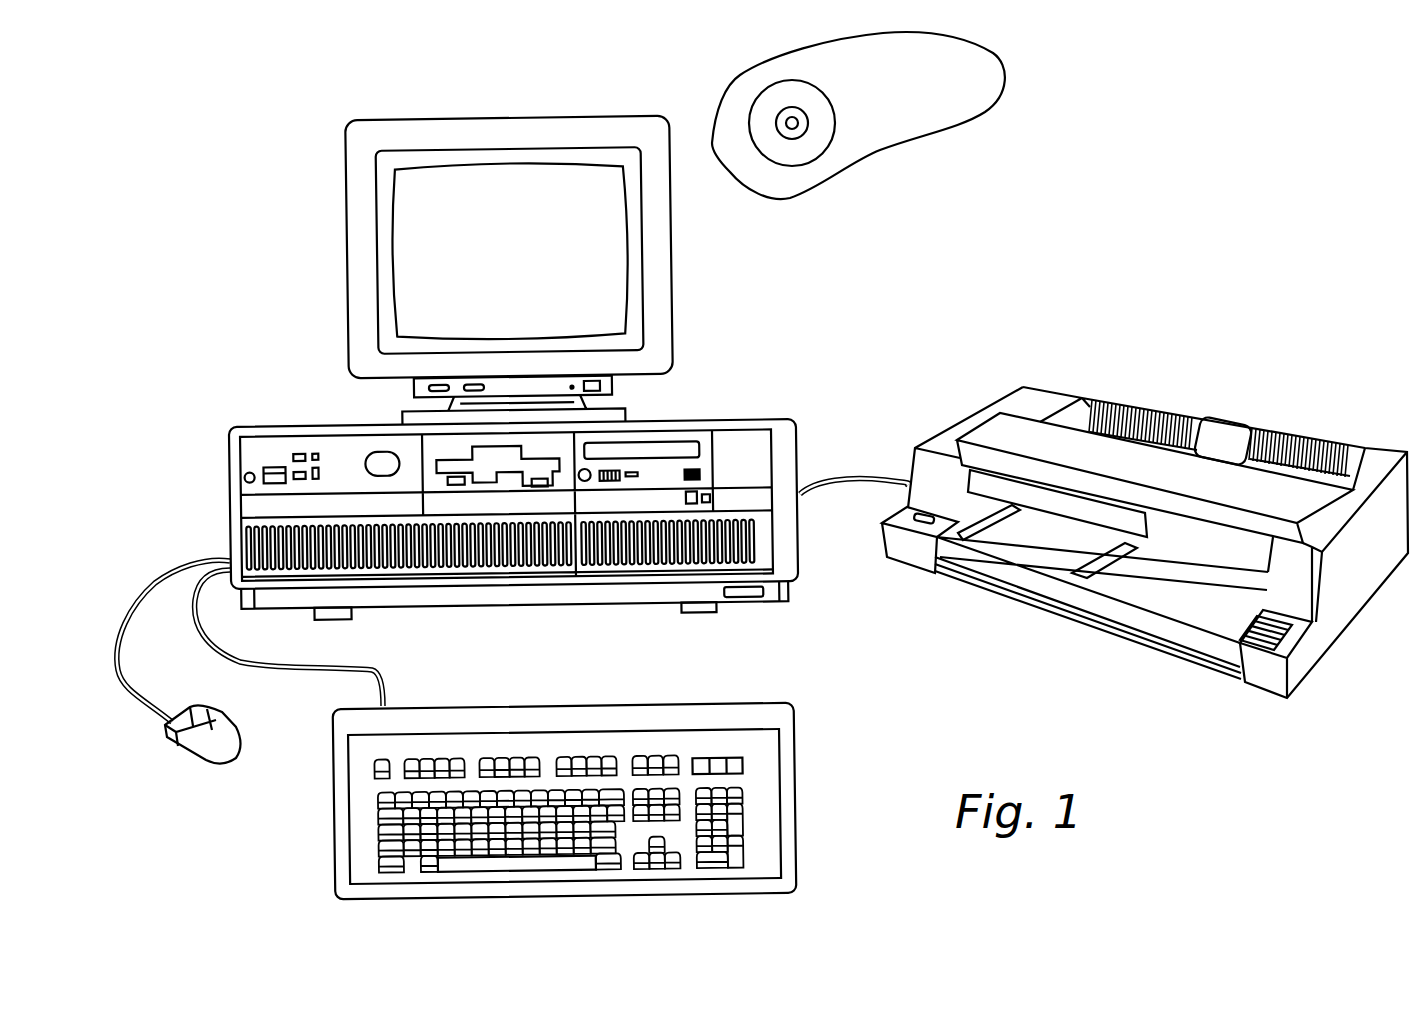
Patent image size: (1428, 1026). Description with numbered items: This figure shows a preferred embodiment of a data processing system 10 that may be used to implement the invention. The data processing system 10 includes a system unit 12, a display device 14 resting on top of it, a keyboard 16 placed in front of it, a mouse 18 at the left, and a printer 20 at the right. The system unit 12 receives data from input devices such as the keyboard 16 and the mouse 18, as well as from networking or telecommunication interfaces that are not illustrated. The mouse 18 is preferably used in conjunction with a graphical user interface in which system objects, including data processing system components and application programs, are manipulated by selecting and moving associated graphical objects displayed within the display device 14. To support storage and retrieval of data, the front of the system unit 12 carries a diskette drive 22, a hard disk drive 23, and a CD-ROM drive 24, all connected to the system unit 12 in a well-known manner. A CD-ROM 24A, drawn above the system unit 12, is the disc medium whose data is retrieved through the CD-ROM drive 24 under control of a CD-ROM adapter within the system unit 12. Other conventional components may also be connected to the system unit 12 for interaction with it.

The data processing system 10 is at (893, 245).
The system unit 12 is at (773, 404).
The display device 14 is at (697, 300).
The keyboard 16 is at (643, 688).
The mouse 18 is at (193, 748).
The printer 20 is at (934, 407).
The diskette drive 22 is at (498, 466).
The hard disk drive 23 is at (698, 497).
The CD-ROM drive 24 is at (641, 450).
The CD-ROM 24A is at (818, 118).